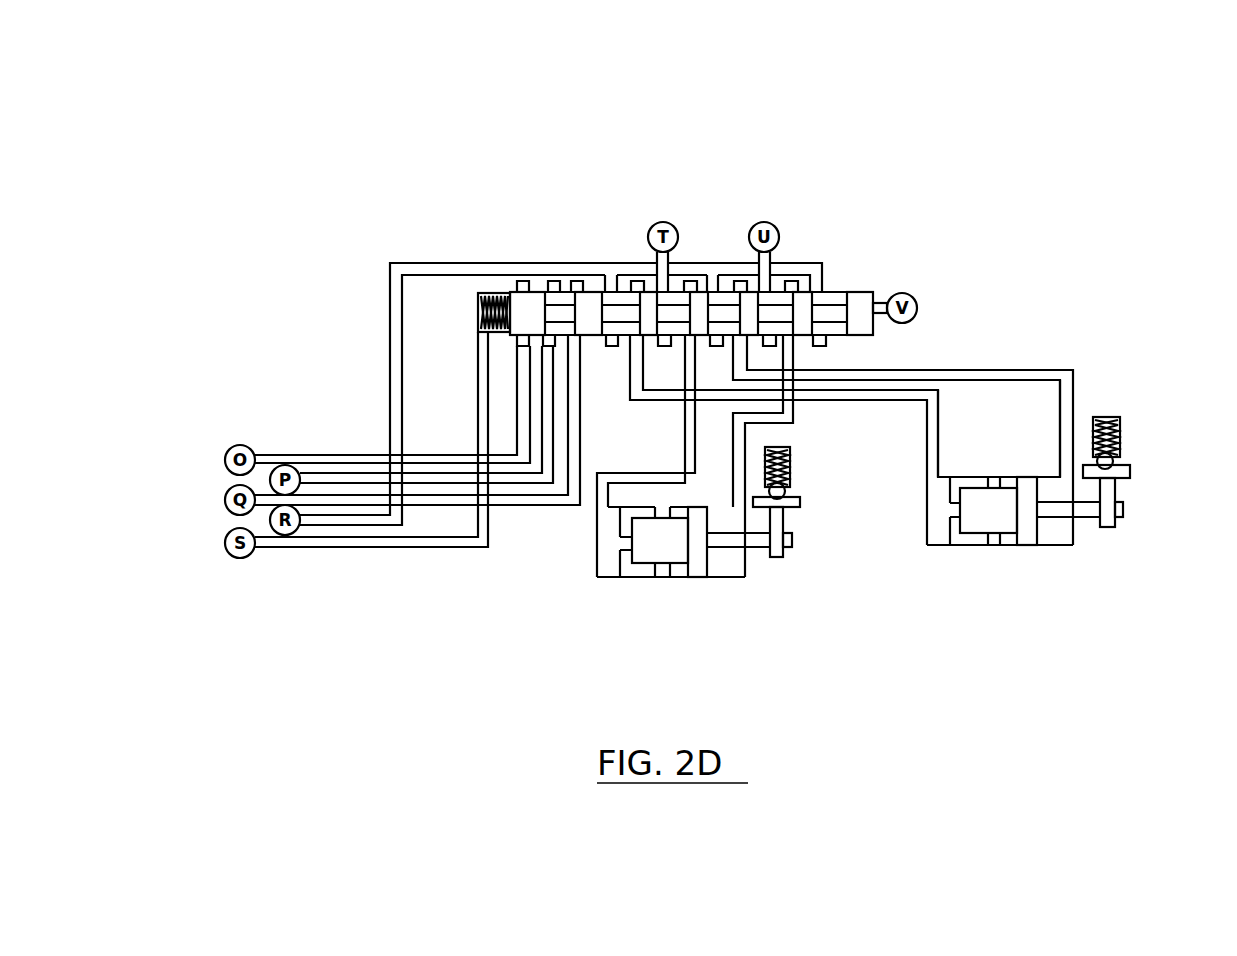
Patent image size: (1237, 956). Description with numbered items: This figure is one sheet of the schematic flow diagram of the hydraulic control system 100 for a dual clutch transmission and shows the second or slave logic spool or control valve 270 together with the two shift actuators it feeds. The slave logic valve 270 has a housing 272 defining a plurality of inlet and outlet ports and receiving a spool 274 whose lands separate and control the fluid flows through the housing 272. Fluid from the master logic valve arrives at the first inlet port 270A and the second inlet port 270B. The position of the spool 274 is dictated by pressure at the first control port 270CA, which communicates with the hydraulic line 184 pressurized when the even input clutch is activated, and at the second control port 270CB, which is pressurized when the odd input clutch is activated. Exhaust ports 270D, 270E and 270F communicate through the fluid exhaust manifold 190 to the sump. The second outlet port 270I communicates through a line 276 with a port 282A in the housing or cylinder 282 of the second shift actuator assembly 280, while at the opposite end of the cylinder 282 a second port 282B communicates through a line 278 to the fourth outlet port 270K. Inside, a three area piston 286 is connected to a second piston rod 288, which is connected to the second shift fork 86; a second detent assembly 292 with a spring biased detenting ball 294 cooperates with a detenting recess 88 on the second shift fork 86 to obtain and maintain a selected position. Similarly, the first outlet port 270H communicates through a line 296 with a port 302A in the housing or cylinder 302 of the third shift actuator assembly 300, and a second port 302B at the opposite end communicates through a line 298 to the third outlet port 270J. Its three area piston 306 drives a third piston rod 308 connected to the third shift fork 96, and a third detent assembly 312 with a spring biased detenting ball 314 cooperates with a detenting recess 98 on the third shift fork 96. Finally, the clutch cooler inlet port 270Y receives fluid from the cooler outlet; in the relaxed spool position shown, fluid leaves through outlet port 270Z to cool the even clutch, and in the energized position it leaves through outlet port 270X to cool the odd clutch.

The hydraulic control system 100 is at (1082, 142).
The second or slave logic spool or control valve 270 is at (1044, 259).
The housing 272 is at (496, 290).
The spool 274 is at (862, 310).
The first control port 270CA is at (480, 316).
The second control port 270CB is at (878, 314).
The first inlet port 270A is at (653, 290).
The second inlet port 270B is at (773, 290).
The exhaust port 270D is at (613, 290).
The exhaust port 270E is at (717, 290).
The exhaust port 270F is at (822, 268).
The first outlet port 270H is at (632, 357).
The second outlet port 270I is at (690, 340).
The third outlet port 270J is at (790, 340).
The fourth outlet port 270K is at (797, 337).
The outlet port 270X is at (523, 333).
The clutch cooler inlet port 270Y is at (553, 333).
The outlet port 270Z is at (577, 337).
The fluid exhaust manifold 190 is at (390, 350).
The hydraulic line 184 is at (478, 445).
The line 278 is at (760, 435).
The line 298 is at (1053, 368).
The second shift actuator assembly 280 is at (606, 624).
The housing or cylinder 282 is at (607, 580).
The port 282A is at (603, 510).
The second port 282B is at (720, 565).
The three area piston 286 is at (645, 540).
The second piston rod 288 is at (765, 578).
The line 276 is at (740, 540).
The second shift fork 86 is at (780, 558).
The detenting recess 88 is at (798, 507).
The second detent assembly 292 is at (792, 468).
The spring biased detenting ball 294 is at (785, 492).
The third shift actuator assembly 300 is at (1016, 624).
The housing or cylinder 302 is at (937, 548).
The port 302A is at (933, 478).
The second port 302B is at (1067, 478).
The line 296 is at (925, 510).
The three area piston 306 is at (978, 525).
The third piston rod 308 is at (1080, 510).
The third detent assembly 312 is at (1110, 416).
The spring biased detenting ball 314 is at (1120, 468).
The detenting recess 98 is at (1125, 478).
The third shift fork 96 is at (1108, 530).